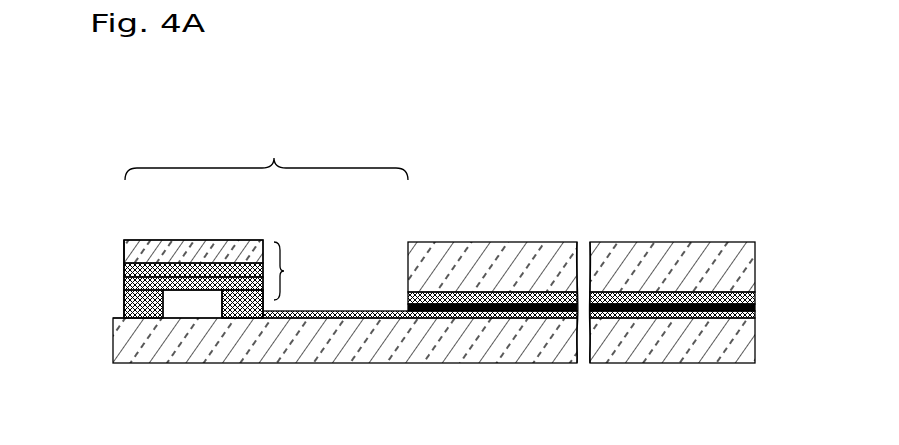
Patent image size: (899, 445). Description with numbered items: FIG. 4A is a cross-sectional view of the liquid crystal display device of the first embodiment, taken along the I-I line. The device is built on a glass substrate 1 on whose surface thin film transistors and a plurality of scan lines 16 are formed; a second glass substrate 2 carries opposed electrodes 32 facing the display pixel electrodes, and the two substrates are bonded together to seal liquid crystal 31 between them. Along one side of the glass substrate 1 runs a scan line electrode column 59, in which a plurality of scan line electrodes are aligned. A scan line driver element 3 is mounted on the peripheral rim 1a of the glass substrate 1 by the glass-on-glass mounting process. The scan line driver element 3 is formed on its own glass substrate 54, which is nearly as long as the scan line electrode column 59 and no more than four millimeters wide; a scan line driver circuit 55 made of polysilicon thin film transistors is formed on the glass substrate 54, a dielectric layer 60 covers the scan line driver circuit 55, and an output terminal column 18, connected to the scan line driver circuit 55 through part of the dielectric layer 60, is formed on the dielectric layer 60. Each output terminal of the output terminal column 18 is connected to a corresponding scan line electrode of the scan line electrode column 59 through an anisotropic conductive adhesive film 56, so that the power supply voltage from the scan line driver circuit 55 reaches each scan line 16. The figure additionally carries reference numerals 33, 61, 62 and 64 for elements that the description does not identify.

The glass substrate 1 is at (315, 363).
The peripheral rim 1a is at (266, 153).
The glass substrate 2 is at (722, 250).
The scan line driver element 3 is at (168, 306).
The scan lines 16 is at (390, 311).
The output terminal column 18 is at (243, 266).
The liquid crystal 31 is at (525, 297).
The opposed electrodes 32 is at (755, 295).
The second conductive layer 33 is at (755, 306).
The glass substrate 54 is at (160, 247).
The scan line driver circuit 55 is at (124, 265).
The anisotropic conductive adhesive film 56 is at (207, 318).
The scan line electrode column 59 is at (248, 300).
The dielectric layer 60 is at (124, 280).
The first electrode 61 is at (124, 294).
The base insulating layer 62 is at (113, 319).
The insulating layer 64 is at (124, 305).